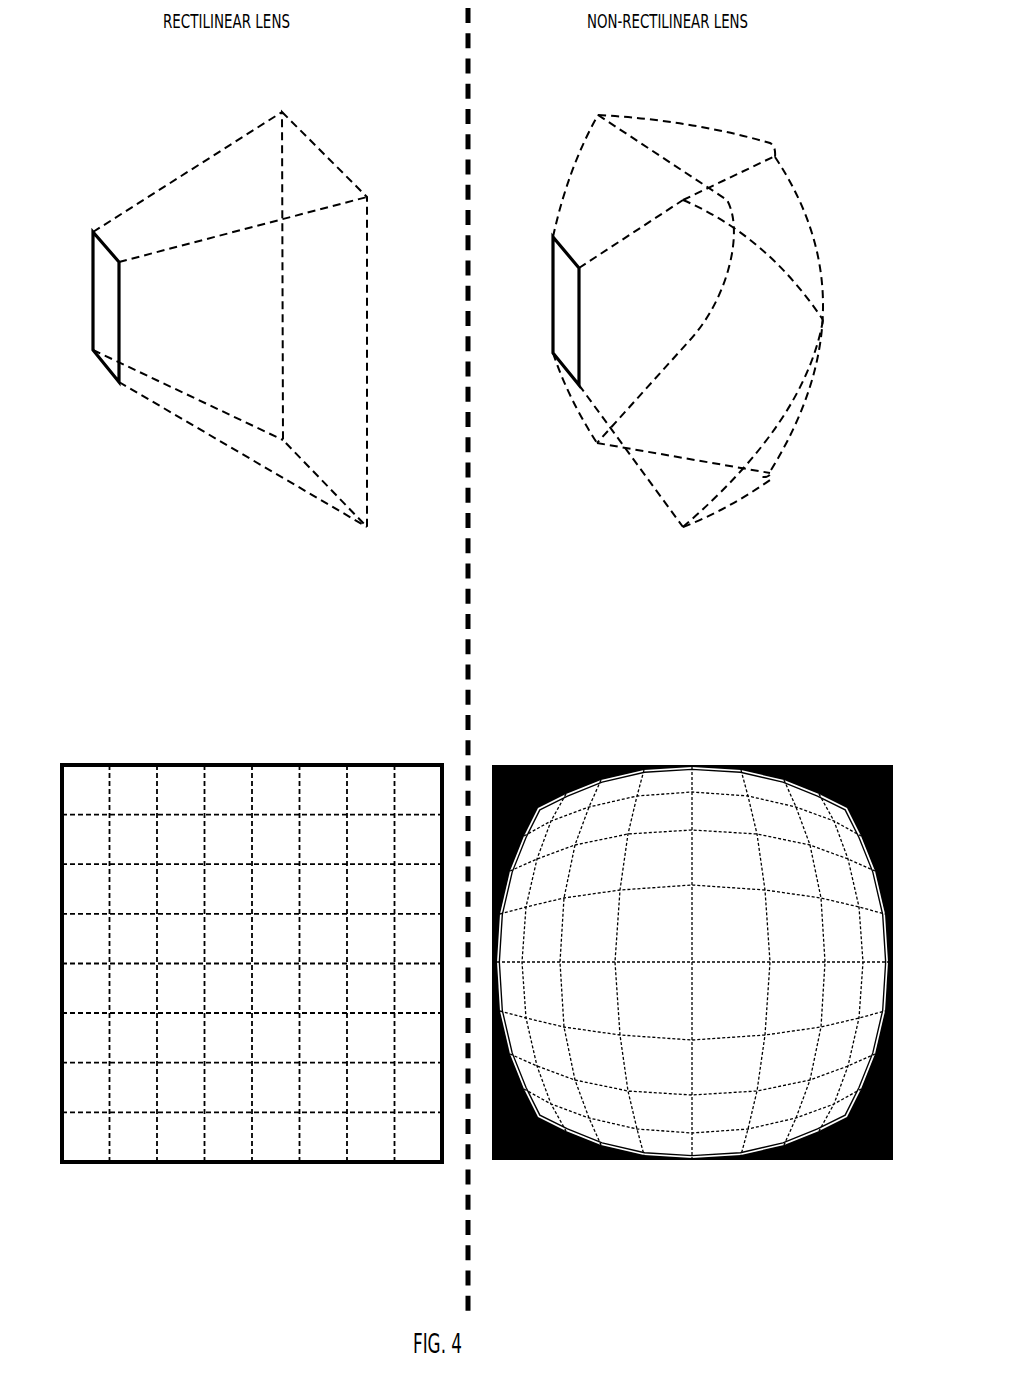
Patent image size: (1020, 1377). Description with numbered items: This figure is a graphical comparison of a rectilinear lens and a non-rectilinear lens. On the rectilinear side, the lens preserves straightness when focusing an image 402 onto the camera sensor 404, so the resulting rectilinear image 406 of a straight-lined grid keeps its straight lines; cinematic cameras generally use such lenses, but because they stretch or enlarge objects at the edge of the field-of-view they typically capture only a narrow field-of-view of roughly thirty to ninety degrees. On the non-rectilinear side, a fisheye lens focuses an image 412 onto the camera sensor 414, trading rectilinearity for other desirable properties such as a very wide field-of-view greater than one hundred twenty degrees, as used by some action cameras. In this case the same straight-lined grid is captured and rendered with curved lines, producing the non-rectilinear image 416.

The image 402 is at (323, 155).
The camera sensor 404 is at (105, 247).
The rectilinear image 406 is at (257, 763).
The image 412 is at (745, 138).
The camera sensor 414 is at (565, 250).
The non-rectilinear image 416 is at (692, 763).